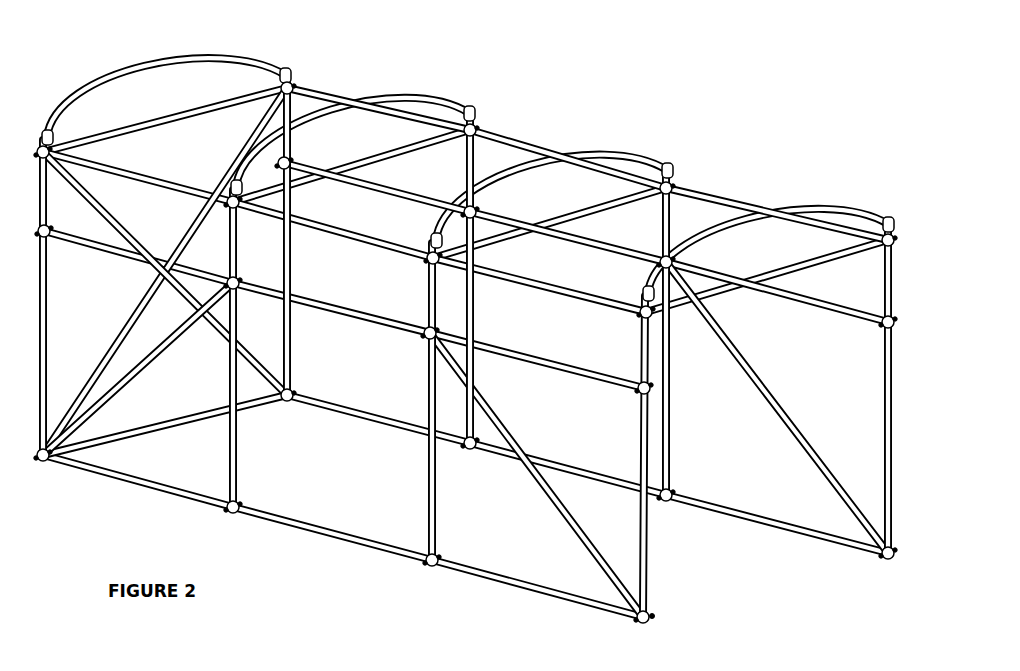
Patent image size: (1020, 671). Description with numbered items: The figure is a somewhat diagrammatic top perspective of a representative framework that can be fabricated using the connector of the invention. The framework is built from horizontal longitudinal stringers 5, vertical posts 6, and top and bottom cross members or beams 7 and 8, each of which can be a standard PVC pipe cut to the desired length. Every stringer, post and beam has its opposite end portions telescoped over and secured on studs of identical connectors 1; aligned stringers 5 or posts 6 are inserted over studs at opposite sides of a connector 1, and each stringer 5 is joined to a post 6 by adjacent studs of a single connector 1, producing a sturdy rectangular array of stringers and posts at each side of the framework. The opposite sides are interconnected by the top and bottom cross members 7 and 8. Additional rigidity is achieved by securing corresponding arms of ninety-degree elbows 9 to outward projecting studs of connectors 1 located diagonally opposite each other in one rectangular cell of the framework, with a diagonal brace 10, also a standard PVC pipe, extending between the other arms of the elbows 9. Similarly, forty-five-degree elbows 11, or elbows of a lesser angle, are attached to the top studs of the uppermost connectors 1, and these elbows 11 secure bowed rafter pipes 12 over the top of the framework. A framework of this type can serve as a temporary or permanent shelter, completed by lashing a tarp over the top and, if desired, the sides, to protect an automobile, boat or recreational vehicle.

The connector 1 is at (640, 315).
The horizontal longitudinal stringer 5 is at (172, 487).
The vertical post 6 is at (237, 455).
The top cross member 7 is at (205, 108).
The bottom cross member 8 is at (255, 398).
The 90° elbow 9 is at (238, 295).
The diagonal brace 10 is at (185, 225).
The 45° elbow 11 is at (432, 240).
The bowed rafter pipe 12 is at (192, 57).